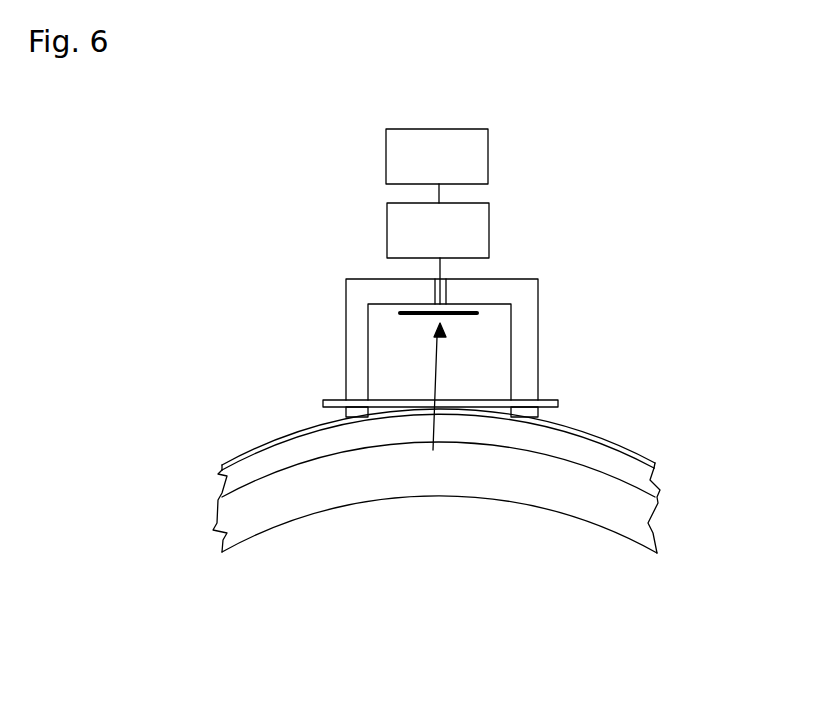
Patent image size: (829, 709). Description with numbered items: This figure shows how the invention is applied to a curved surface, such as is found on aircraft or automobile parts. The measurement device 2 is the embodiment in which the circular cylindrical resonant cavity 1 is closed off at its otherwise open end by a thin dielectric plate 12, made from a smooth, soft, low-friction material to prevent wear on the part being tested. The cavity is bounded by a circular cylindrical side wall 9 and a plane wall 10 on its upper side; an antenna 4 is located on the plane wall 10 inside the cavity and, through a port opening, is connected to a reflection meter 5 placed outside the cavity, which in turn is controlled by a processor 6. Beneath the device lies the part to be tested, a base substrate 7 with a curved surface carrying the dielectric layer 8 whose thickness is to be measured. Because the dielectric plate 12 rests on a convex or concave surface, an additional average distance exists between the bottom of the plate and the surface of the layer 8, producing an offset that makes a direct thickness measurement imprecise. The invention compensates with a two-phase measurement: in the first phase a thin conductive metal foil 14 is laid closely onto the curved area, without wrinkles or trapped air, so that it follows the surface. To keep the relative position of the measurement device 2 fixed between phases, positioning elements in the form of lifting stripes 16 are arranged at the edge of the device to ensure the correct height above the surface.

The resonant cavity 1 is at (393, 363).
The measurement device 2 is at (333, 360).
The antenna 4 is at (433, 450).
The reflection meter 5 is at (487, 248).
The processor 6 is at (487, 167).
The substrate 7 is at (592, 517).
The dielectric layer 8 is at (642, 478).
The circular cylindrical side wall 9 is at (523, 342).
The plane wall 10 is at (393, 290).
The thin dielectric plate 12 is at (547, 402).
The metal foil 14 is at (215, 473).
The lifting stripes 16 is at (528, 412).